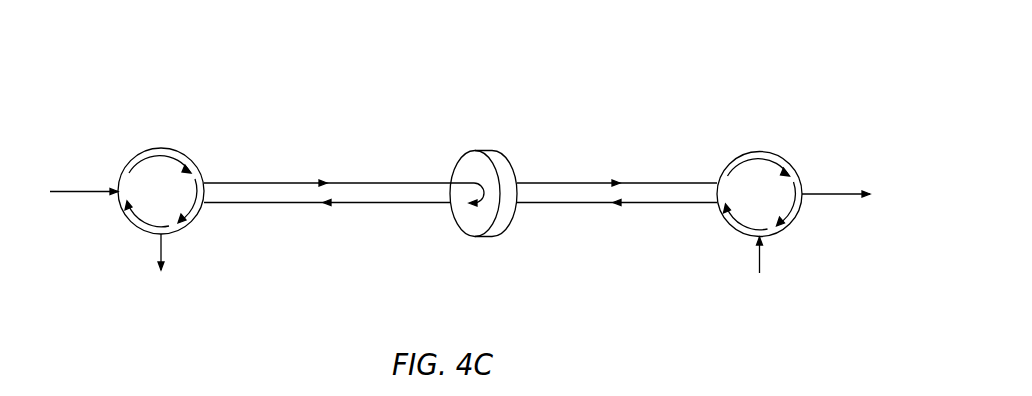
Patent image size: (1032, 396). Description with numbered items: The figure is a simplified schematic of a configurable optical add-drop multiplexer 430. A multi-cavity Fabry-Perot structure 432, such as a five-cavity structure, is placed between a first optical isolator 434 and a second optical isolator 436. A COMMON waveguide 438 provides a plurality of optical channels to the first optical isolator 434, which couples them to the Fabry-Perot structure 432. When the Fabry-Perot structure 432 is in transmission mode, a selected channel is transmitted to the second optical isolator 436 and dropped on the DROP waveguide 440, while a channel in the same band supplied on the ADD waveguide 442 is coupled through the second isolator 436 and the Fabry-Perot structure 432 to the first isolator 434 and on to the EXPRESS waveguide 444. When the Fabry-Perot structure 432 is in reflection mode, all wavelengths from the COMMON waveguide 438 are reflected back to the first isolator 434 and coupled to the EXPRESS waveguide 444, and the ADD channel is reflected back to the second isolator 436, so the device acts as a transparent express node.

The optical add-drop multiplexer 430 is at (652, 75).
The multi-cavity Fabry-Perot structure 432 is at (487, 152).
The first optical isolator 434 is at (160, 148).
The second optical isolator 436 is at (757, 152).
The COMMON waveguide 438 is at (85, 193).
The DROP waveguide 440 is at (840, 196).
The ADD waveguide 442 is at (755, 255).
The EXPRESS waveguide 444 is at (158, 243).